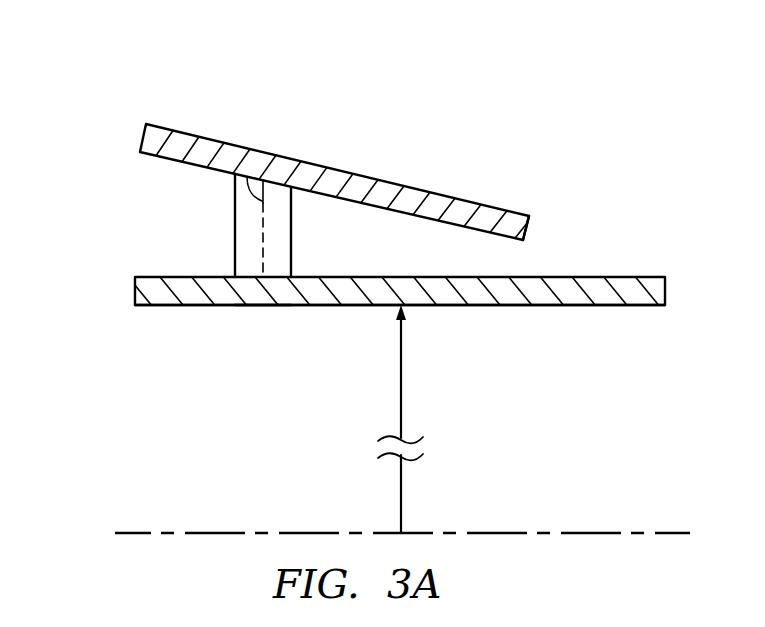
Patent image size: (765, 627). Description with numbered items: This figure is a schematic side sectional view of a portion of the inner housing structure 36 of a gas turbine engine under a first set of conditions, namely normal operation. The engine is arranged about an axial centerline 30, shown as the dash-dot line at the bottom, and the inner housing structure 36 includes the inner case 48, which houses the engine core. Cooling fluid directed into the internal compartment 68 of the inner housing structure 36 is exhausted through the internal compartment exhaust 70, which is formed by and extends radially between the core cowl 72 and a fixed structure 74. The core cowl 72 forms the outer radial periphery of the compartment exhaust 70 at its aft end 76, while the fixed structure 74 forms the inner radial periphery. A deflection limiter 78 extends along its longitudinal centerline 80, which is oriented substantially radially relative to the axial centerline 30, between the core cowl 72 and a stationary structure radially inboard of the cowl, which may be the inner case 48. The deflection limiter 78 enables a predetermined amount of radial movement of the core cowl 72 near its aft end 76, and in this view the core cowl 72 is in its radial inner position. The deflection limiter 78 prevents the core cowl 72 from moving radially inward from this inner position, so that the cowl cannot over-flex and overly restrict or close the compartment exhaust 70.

The axial centerline 30 is at (677, 530).
The inner housing structure 36 is at (428, 99).
The inner case 48 is at (251, 366).
The internal compartment 68 is at (129, 254).
The internal compartment exhaust 70 is at (534, 256).
The core cowl 72 is at (305, 147).
The fixed structure 74 is at (528, 322).
The aft end 76 is at (528, 227).
The deflection limiter 78 is at (217, 218).
The longitudinal centerline 80 is at (257, 148).